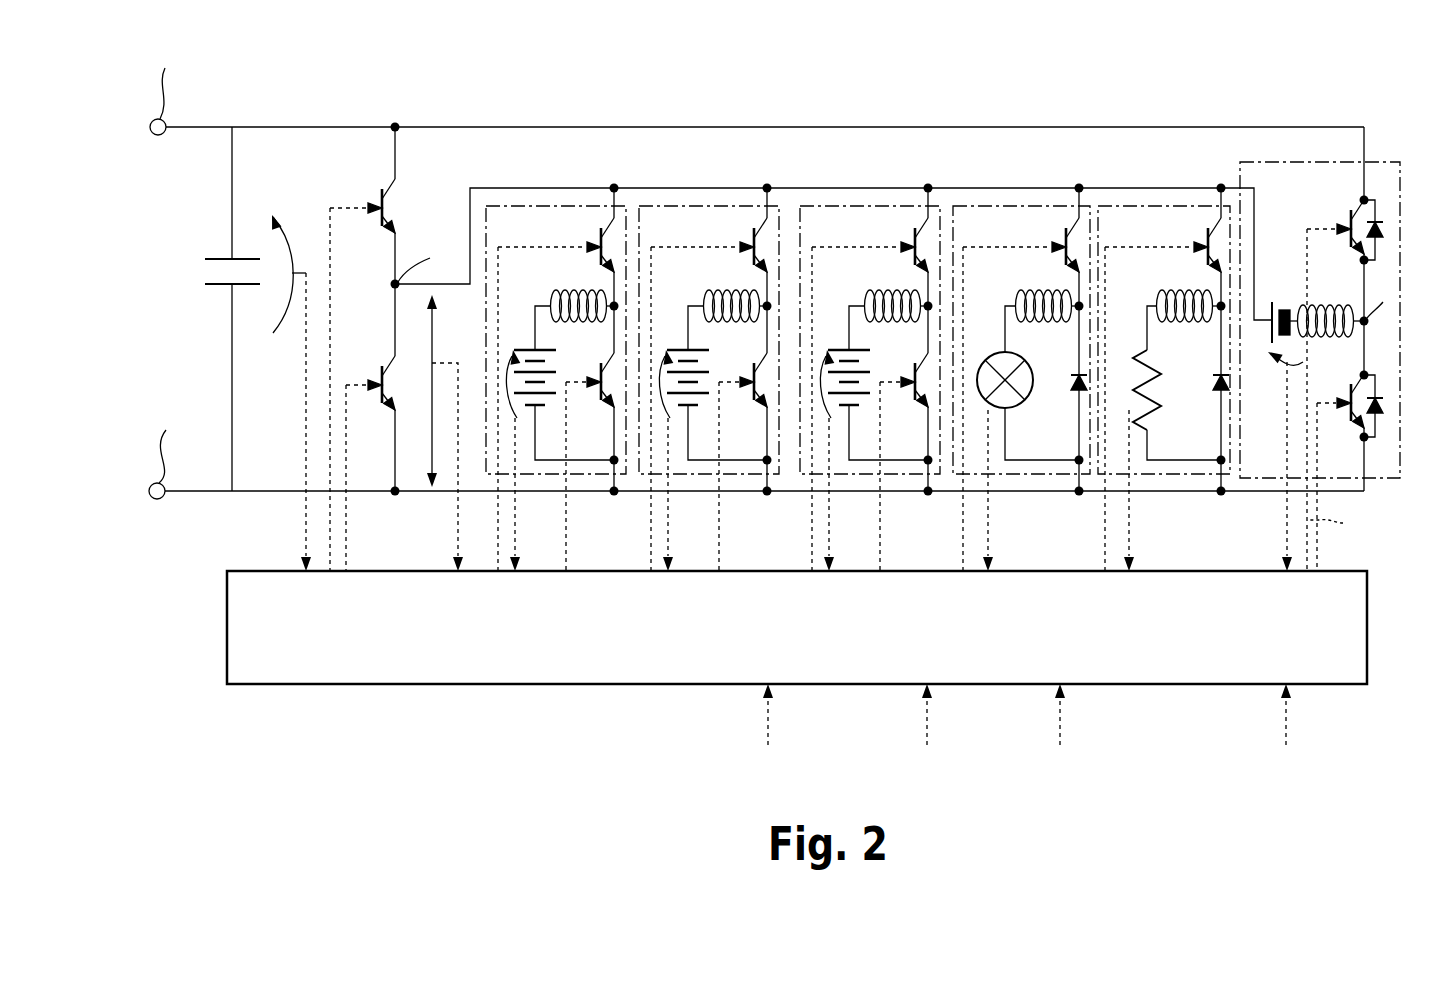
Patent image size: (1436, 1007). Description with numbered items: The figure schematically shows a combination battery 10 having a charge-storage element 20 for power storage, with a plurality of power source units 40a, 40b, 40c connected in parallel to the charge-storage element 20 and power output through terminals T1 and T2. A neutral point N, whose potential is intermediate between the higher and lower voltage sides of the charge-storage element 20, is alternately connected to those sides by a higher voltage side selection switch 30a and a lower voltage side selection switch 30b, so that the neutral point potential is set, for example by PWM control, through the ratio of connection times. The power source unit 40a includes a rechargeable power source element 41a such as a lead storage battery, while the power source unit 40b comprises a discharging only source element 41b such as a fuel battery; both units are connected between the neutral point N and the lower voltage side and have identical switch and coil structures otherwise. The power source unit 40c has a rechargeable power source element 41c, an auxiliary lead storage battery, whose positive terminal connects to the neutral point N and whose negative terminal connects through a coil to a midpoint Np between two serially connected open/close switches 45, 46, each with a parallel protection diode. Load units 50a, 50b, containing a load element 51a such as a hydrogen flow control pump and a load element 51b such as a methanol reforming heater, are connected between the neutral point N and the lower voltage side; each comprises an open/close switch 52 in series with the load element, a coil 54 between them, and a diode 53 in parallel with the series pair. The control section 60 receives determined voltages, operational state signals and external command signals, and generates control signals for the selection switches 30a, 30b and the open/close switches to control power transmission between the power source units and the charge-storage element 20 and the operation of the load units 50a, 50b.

The combination battery 10 is at (614, 88).
The charge-storage element 20 is at (214, 212).
The higher voltage side selection switch 30a is at (374, 192).
The lower voltage side selection switch 30b is at (376, 366).
The power source unit 40a is at (532, 206).
The power source unit 40b is at (685, 206).
The power source unit 40c is at (1276, 162).
The rechargeable power source element 41a is at (515, 340).
The discharging only source element 41b is at (668, 340).
The rechargeable power source element 41c is at (1277, 282).
The open/close switch 45 is at (1336, 207).
The open/close switch 46 is at (1343, 382).
The load unit 50a is at (1011, 206).
The load unit 50b is at (1138, 206).
The load element 51a is at (1000, 350).
The load element 51b is at (1135, 370).
The open/close switch 52 is at (1055, 240).
The diode 53 is at (1078, 396).
The coil 54 is at (1040, 324).
The control section 60 is at (227, 592).